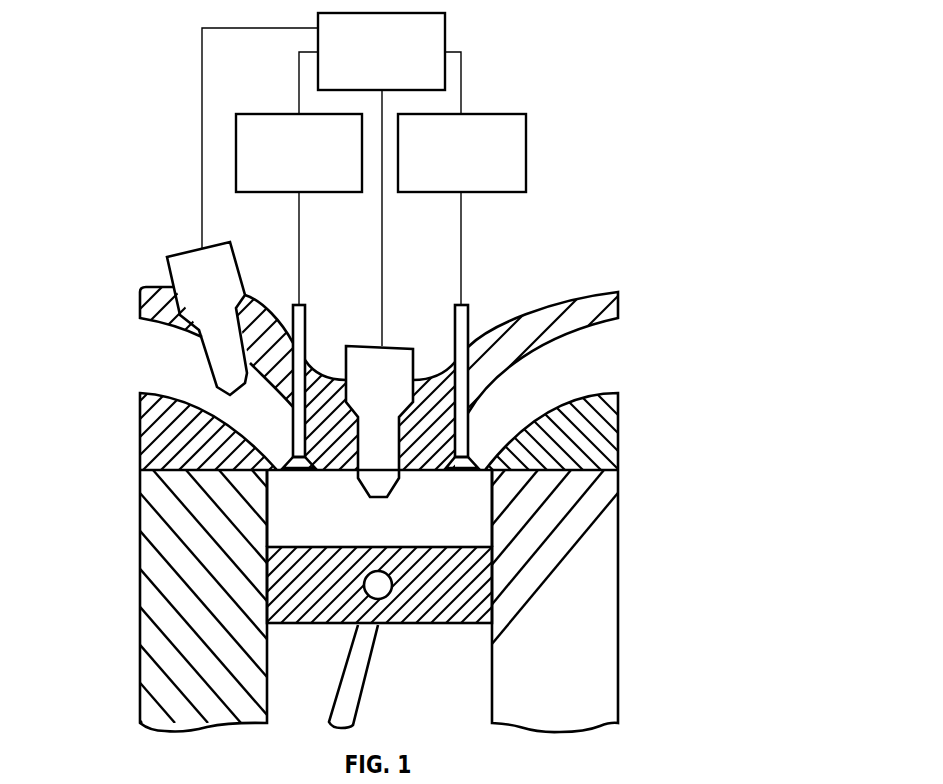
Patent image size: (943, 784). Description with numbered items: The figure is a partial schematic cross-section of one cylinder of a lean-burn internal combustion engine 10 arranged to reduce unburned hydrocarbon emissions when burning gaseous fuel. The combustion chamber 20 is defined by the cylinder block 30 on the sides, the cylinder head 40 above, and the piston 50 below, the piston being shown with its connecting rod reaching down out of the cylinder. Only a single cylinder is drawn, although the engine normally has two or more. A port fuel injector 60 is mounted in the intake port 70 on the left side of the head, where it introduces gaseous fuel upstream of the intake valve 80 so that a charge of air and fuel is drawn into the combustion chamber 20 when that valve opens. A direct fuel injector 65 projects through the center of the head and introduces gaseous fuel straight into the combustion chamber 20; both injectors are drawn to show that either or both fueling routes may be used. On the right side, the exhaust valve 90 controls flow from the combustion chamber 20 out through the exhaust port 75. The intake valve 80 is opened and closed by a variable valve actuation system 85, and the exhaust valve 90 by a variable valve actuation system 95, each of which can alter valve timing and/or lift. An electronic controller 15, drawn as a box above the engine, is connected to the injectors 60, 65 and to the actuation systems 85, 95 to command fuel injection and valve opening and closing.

The engine 10 is at (366, 372).
The electronic controller 15 is at (393, 65).
The combustion chamber 20 is at (368, 534).
The cylinder block 30 is at (178, 560).
The cylinder head 40 is at (172, 440).
The piston 50 is at (440, 608).
The port fuel injector 60 is at (236, 262).
The direct fuel injector 65 is at (407, 346).
The intake port 70 is at (167, 370).
The exhaust port 75 is at (592, 370).
The intake valve 80 is at (306, 327).
The variable valve actuation system 85 is at (287, 166).
The exhaust valve 90 is at (469, 318).
The variable valve actuation system 95 is at (449, 166).